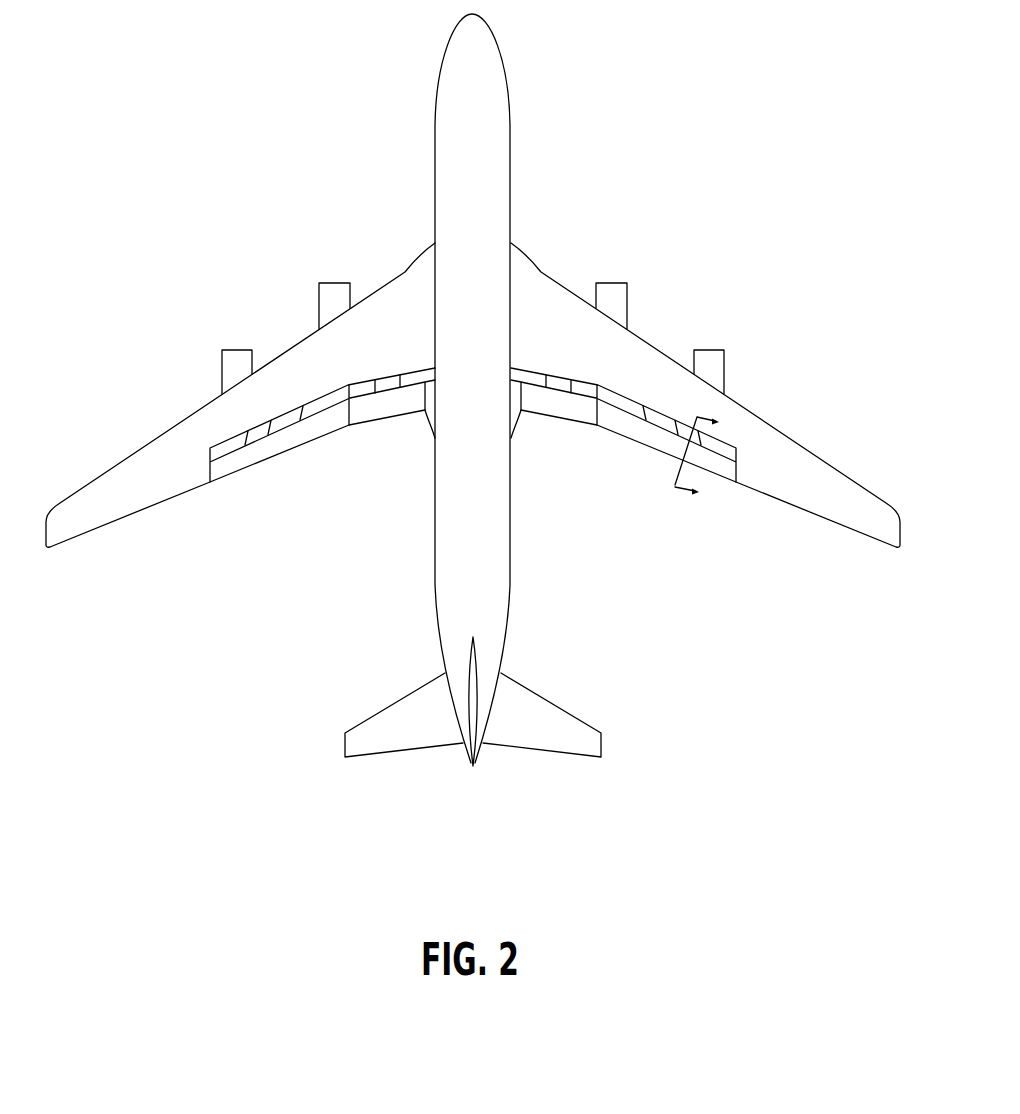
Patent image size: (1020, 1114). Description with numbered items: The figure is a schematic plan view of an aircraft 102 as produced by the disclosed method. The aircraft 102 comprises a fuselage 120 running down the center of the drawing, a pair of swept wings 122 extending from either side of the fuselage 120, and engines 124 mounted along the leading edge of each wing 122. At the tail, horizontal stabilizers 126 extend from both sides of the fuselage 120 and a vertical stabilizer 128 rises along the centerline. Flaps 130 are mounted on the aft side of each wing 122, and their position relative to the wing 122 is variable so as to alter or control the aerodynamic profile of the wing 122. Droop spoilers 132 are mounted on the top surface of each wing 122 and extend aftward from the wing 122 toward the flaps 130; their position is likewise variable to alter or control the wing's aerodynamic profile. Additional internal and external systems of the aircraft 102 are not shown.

The aircraft 102 is at (786, 79).
The fuselage 120 is at (511, 144).
The wings 122 is at (88, 520).
The engines 124 is at (319, 292).
The horizontal stabilizers 126 is at (378, 757).
The vertical stabilizer 128 is at (479, 718).
The flaps 130 is at (657, 440).
The droop spoilers 132 is at (652, 407).